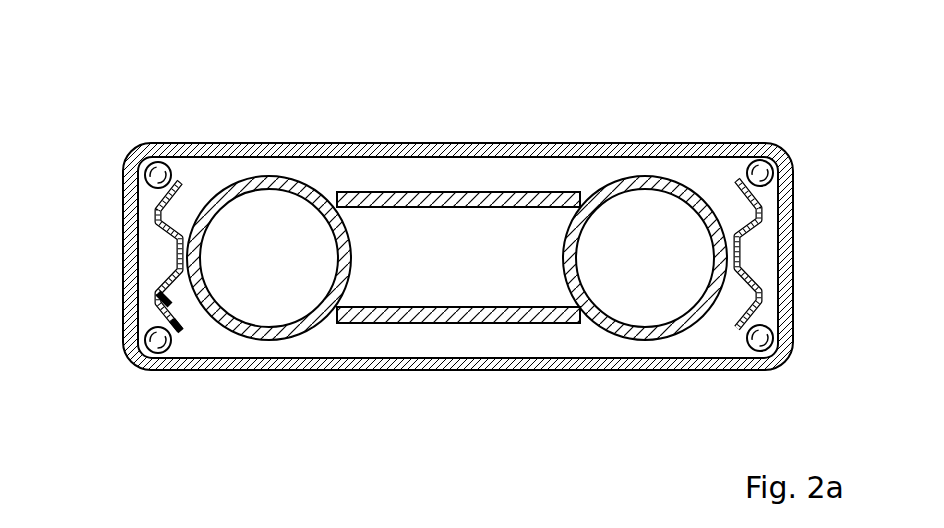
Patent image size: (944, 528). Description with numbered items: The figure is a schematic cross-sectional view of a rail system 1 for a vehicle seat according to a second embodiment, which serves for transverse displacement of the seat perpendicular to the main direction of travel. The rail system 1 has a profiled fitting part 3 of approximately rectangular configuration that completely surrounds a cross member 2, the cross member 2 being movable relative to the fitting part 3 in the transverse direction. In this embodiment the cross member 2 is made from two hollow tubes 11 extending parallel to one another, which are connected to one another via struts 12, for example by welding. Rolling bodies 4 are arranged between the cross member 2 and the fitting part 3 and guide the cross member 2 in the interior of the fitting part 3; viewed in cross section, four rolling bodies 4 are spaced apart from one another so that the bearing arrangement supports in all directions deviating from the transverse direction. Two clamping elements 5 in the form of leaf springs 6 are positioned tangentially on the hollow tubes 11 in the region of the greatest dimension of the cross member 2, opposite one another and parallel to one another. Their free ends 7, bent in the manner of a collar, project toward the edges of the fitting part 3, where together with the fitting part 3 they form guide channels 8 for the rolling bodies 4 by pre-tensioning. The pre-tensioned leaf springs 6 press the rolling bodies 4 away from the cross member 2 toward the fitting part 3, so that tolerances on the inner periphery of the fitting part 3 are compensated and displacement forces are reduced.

The rail system 1 is at (131, 134).
The cross member 2 is at (447, 276).
The fitting part 3 is at (663, 150).
The rolling bodies 4 is at (757, 170).
The clamping elements 5 is at (163, 287).
The leaf springs 6 is at (753, 281).
The free ends 7 is at (183, 318).
The guide channels 8 is at (150, 312).
The hollow tubes 11 is at (278, 178).
The struts 12 is at (420, 195).